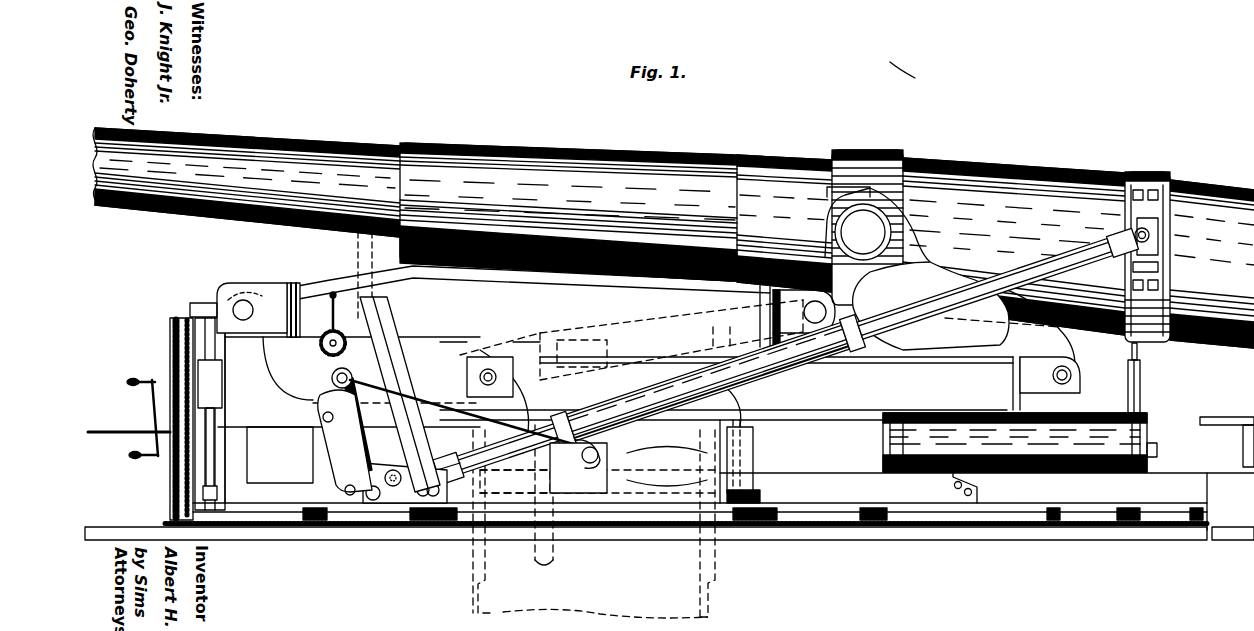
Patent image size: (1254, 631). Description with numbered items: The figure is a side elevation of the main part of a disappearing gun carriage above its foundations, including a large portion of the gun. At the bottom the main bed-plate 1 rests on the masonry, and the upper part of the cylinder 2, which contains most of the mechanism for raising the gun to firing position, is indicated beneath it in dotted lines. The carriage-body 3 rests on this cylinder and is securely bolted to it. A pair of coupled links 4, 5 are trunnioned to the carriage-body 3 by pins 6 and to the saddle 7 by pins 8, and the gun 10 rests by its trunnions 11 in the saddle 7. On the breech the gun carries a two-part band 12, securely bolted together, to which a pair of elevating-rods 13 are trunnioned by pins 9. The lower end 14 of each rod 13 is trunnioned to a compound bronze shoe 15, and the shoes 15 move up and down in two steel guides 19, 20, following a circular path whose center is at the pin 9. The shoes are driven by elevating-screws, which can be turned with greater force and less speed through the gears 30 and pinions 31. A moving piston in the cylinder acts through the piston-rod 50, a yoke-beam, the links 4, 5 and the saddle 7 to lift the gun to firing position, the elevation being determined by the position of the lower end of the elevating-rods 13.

The main bed-plate 1 is at (943, 530).
The cylinder 2 is at (708, 606).
The carriage-body 3 is at (671, 421).
The coupled link 4 is at (545, 306).
The coupled link 5 is at (780, 383).
The pin 6 is at (245, 300).
The saddle 7 is at (950, 276).
The pin 8 is at (1090, 384).
The pin 9 is at (1160, 240).
The gun 10 is at (1030, 172).
The trunnion 11 is at (863, 232).
The two-part band 12 is at (1167, 175).
The elevating-rod 13 is at (640, 397).
The lower end of the rod 14 is at (436, 465).
The shoe 15 is at (387, 500).
The steel guide 19 is at (391, 394).
The steel guide 20 is at (333, 443).
The gear 30 is at (320, 312).
The pinion 31 is at (318, 352).
The piston-rod 50 is at (563, 557).